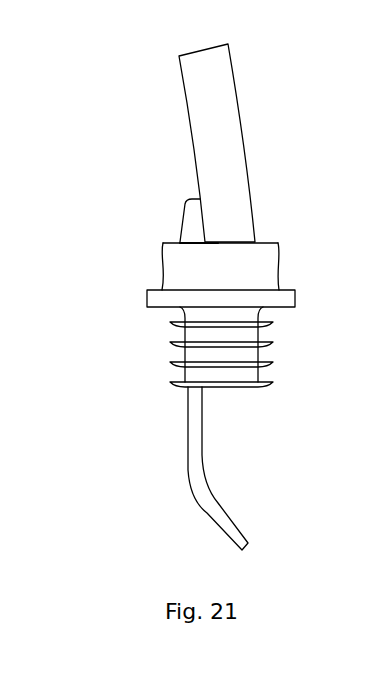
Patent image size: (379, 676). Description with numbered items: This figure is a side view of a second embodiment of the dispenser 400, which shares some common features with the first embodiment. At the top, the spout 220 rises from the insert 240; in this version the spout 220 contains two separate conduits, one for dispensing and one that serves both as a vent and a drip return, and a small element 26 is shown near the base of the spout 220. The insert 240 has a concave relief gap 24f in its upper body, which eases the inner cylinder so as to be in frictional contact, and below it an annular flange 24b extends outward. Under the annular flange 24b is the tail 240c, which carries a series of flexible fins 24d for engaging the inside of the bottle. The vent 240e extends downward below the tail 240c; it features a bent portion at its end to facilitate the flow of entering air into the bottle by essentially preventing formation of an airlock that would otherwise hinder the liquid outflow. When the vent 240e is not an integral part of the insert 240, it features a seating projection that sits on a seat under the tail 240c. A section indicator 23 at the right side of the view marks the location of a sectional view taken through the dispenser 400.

The dispenser 400 is at (84, 136).
The spout 220 is at (222, 113).
The protrusion 26 is at (192, 218).
The concave relief gap 24f is at (163, 260).
The insert 240 is at (262, 260).
The section line 23 is at (363, 280).
The annular flange 24b is at (283, 298).
The flexible fins 24d is at (170, 380).
The tail 240c is at (216, 347).
The vent 240e is at (195, 487).